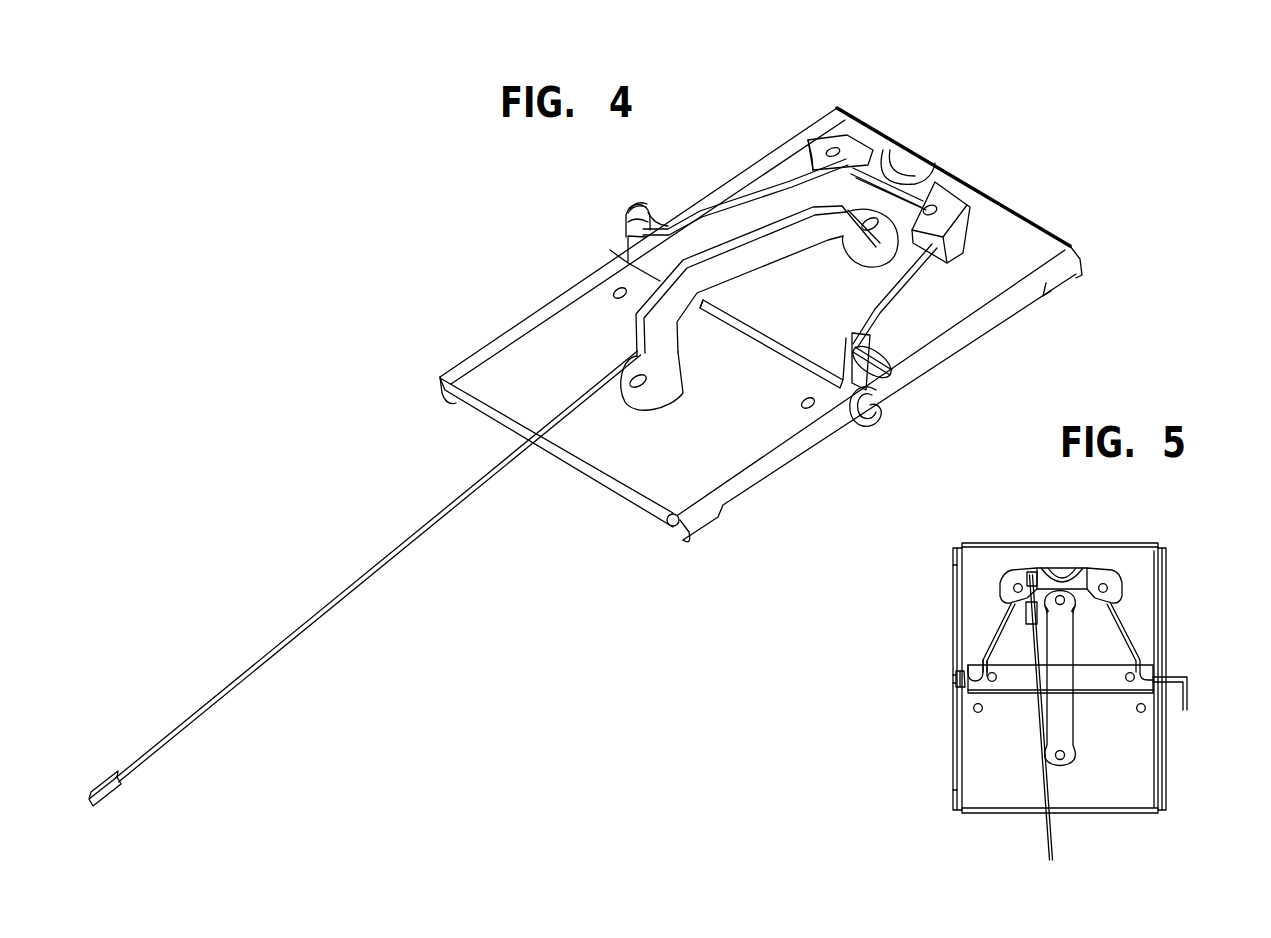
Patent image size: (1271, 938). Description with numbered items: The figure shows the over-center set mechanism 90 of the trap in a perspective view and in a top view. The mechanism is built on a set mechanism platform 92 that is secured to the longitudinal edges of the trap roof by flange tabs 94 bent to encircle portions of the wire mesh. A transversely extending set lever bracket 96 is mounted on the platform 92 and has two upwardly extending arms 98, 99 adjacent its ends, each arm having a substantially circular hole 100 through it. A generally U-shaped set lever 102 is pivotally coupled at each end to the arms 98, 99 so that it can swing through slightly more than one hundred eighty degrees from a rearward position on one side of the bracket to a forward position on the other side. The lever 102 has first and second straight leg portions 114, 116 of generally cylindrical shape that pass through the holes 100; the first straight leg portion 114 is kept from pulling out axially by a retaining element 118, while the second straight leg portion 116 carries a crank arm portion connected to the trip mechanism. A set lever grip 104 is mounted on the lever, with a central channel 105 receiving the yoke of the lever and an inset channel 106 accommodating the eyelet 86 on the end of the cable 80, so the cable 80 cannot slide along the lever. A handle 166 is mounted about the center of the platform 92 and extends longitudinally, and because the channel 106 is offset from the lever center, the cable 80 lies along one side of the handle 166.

In FIG. 4, the cable 80 is at (397, 548).
In FIG. 5, the cable 80 is at (1055, 832).
In FIG. 5, the eyelet 86 is at (1028, 578).
In FIG. 4, the over-center set mechanism 90 is at (869, 103).
In FIG. 5, the over-center set mechanism 90 is at (873, 651).
In FIG. 4, the set mechanism platform 92 is at (470, 348).
In FIG. 5, the set mechanism platform 92 is at (1152, 587).
In FIG. 4, the flange tabs 94 is at (1067, 278).
In FIG. 5, the flange tabs 94 is at (953, 792).
In FIG. 4, the set lever bracket 96 is at (830, 400).
In FIG. 4, the arm 98 is at (628, 247).
In FIG. 4, the arm 99 is at (898, 366).
In FIG. 4, the circular hole 100 is at (660, 208).
In FIG. 4, the set lever 102 is at (785, 176).
In FIG. 5, the set lever 102 is at (1132, 622).
In FIG. 4, the set lever grip 104 is at (945, 205).
In FIG. 4, the central channel 105 is at (903, 178).
In FIG. 4, the inset channel 106 is at (875, 148).
In FIG. 5, the inset channel 106 is at (1035, 572).
In FIG. 5, the first straight leg portion 114 is at (980, 672).
In FIG. 4, the second straight leg portion 116 is at (888, 400).
In FIG. 5, the second straight leg portion 116 is at (1175, 680).
In FIG. 4, the retaining element 118 is at (622, 212).
In FIG. 5, the retaining element 118 is at (956, 680).
In FIG. 4, the handle 166 is at (740, 235).
In FIG. 5, the handle 166 is at (1072, 722).